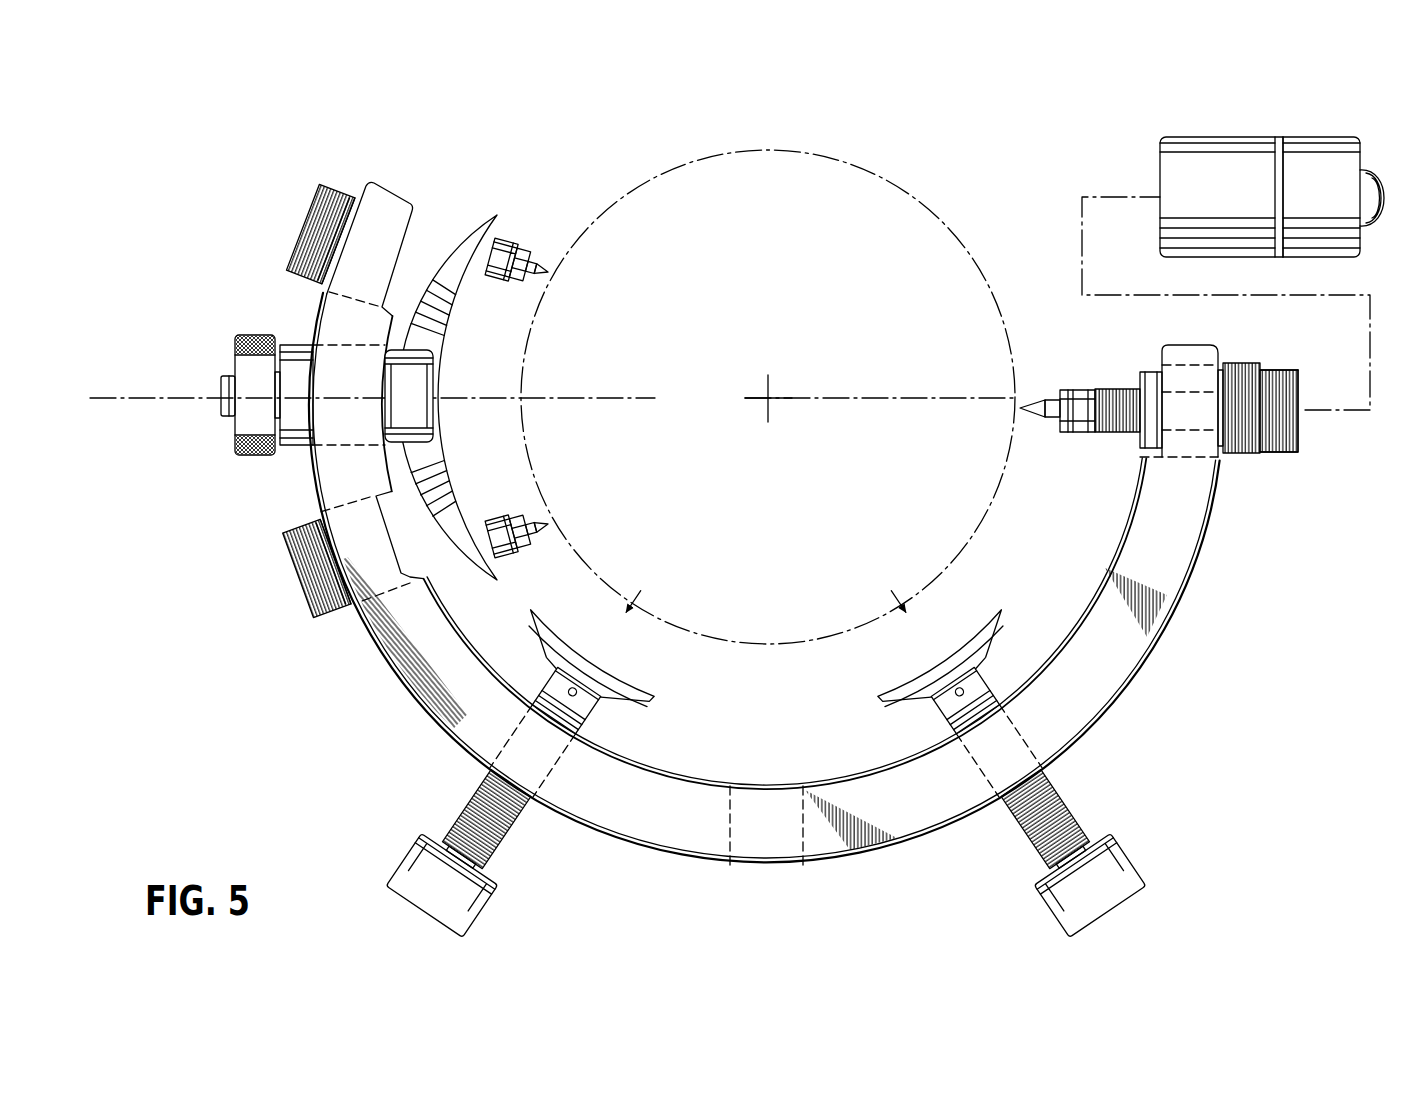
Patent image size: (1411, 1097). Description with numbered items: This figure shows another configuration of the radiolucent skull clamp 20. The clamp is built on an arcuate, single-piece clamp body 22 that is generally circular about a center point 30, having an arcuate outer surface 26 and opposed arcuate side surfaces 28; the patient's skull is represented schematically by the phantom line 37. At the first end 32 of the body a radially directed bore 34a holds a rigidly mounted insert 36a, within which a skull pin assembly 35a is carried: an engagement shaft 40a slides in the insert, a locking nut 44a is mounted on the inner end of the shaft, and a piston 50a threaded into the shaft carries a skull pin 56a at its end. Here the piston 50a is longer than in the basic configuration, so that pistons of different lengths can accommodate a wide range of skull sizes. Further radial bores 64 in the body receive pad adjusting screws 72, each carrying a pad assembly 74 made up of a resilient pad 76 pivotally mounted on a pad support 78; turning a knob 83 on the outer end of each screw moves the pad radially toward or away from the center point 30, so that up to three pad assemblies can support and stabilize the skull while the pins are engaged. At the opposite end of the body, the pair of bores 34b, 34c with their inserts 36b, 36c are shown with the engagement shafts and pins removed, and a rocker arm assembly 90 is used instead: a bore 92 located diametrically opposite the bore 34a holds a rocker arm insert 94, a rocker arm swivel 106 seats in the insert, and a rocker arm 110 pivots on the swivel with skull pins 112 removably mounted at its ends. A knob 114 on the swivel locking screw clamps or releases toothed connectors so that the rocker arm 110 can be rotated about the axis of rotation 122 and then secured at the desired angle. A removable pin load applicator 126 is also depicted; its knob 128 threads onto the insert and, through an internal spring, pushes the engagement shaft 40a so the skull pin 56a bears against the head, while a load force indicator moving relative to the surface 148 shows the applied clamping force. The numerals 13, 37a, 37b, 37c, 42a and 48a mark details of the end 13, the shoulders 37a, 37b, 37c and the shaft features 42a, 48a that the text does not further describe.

The sensor end 13 is at (1381, 198).
The skull clamp 20 is at (764, 498).
The clamp body 22 is at (764, 577).
The outer surface 26 is at (1138, 664).
The side surfaces 28 is at (1073, 626).
The center point 30 is at (772, 394).
The first end 32 is at (1133, 470).
The bore 34a is at (1188, 455).
The bore 34b is at (374, 212).
The bore 34c is at (357, 502).
The skull pin assembly 35a is at (1190, 436).
The insert 36a is at (1243, 360).
The insert 36b is at (325, 187).
The insert 36c is at (300, 513).
The phantom line 37 is at (913, 188).
The shoulder 37a is at (1232, 460).
The shoulder 37b is at (336, 188).
The shoulder 37c is at (325, 613).
The engagement shaft 40a is at (1301, 386).
The end face 42a is at (1292, 370).
The locking nut 44a is at (1150, 372).
The thread end 48a is at (1275, 449).
The piston 50a is at (1105, 388).
The skull pin 56a is at (1048, 390).
The bores 64 is at (536, 766).
The pad adjusting screw 72 is at (490, 849).
The pad assembly 74 is at (766, 596).
The resilient pad 76 is at (552, 614).
The pad support 78 is at (590, 714).
The knob 83 is at (398, 850).
The rocker arm assembly 90 is at (481, 373).
The bore 92 is at (370, 347).
The rocker arm insert 94 is at (294, 342).
The rocker arm swivel 106 is at (393, 409).
The rocker arm 110 is at (447, 458).
The skull pins 112 is at (530, 250).
The knob 114 is at (233, 368).
The axis of rotation 122 is at (612, 396).
The removable pin load applicator 126 is at (1285, 171).
The knob 128 is at (1208, 203).
The surface 148 is at (1370, 165).